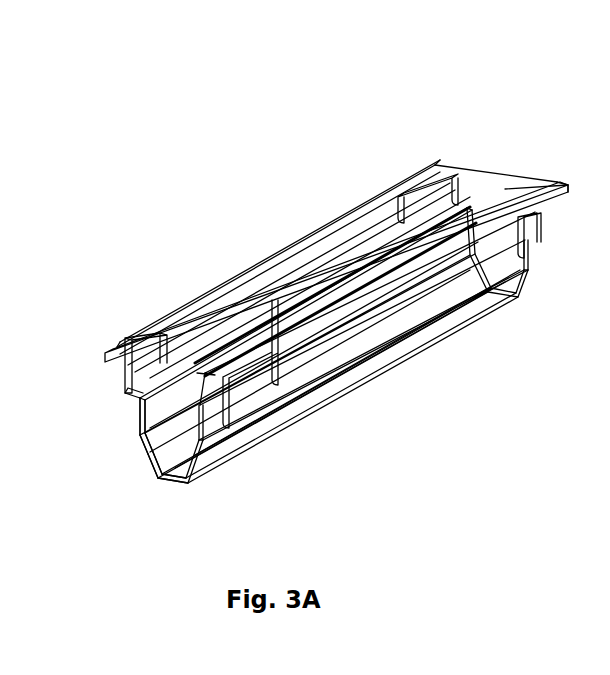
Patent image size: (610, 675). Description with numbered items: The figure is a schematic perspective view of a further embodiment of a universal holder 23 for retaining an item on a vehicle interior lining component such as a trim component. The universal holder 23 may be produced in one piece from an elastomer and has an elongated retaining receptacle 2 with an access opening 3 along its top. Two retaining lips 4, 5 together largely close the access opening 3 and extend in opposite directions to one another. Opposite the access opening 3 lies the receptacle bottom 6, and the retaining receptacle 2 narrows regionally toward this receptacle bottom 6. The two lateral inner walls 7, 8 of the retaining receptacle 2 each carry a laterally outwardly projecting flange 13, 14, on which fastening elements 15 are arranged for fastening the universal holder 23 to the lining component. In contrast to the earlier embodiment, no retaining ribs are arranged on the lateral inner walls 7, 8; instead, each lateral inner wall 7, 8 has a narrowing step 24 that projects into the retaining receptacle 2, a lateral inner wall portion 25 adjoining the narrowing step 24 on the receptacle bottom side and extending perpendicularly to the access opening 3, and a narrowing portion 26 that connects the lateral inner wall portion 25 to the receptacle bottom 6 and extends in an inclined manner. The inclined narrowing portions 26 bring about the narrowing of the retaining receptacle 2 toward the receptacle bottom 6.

The retaining receptacle 2 is at (158, 470).
The access opening 3 is at (190, 350).
The retaining lip 4 is at (483, 180).
The retaining lip 5 is at (522, 183).
The receptacle bottom 6 is at (178, 485).
The lateral inner wall 7 is at (133, 395).
The lateral inner wall 8 is at (250, 402).
The flange 13 is at (121, 340).
The flange 14 is at (557, 183).
The fastening element 15 is at (273, 330).
The universal holder 23 is at (347, 116).
The narrowing step 24 is at (143, 400).
The lateral inner wall portion 25 is at (150, 430).
The narrowing portion 26 is at (153, 456).